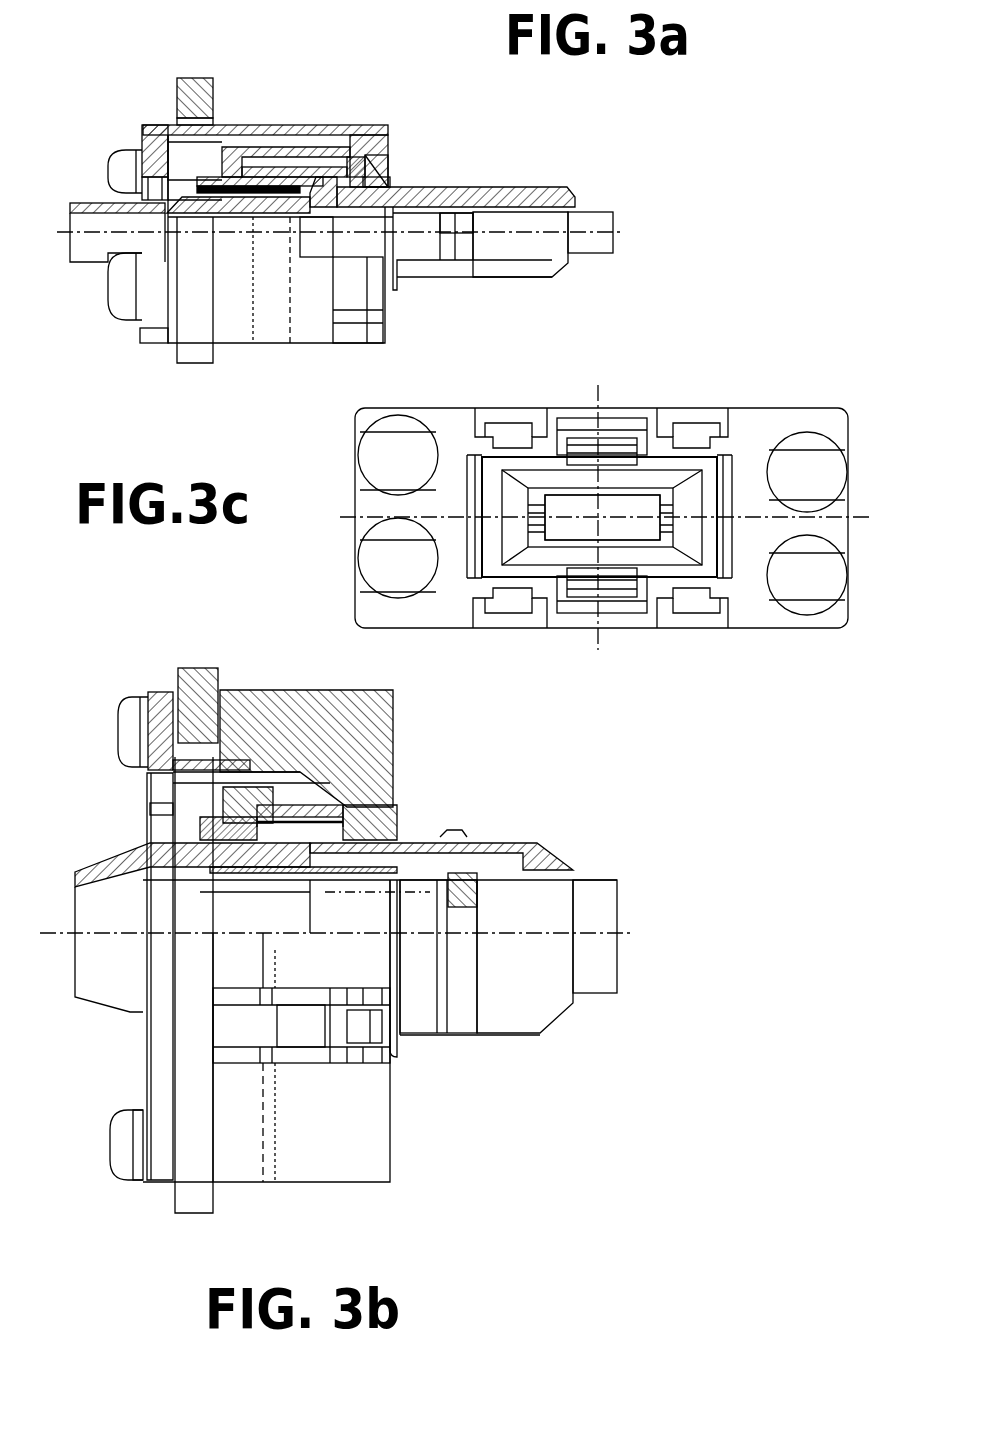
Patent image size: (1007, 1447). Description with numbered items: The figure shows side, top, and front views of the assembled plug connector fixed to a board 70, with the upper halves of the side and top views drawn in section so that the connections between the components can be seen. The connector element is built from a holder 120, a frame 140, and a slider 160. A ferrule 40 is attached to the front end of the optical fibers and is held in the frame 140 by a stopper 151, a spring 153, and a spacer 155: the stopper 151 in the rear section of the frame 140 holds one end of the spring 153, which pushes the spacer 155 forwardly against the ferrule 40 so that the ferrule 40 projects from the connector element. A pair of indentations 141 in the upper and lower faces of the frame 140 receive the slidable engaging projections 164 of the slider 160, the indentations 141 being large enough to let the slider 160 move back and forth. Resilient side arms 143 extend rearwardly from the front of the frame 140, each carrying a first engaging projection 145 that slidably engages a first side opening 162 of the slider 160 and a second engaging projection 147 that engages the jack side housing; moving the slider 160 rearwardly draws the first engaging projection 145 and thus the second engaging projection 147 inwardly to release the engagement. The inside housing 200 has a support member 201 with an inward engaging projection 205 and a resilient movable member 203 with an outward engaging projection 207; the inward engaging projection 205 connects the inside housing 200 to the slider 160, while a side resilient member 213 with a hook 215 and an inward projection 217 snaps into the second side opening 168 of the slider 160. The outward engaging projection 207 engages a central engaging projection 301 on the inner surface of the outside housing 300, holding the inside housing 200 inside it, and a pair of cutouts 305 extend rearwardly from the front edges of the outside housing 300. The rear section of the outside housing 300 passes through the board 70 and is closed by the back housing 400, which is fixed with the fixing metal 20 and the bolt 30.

In FIG. 3C, the fixing metal 20 is at (383, 565).
In FIG. 3A, the bolt 30 is at (113, 157).
In FIG. 3B, the bolt 30 is at (125, 715).
In FIG. 3A, the ferrule 40 is at (596, 243).
In FIG. 3B, the ferrule 40 is at (598, 900).
In FIG. 3A, the board 70 is at (178, 100).
In FIG. 3A, the holder 120 is at (95, 203).
In FIG. 3A, the frame 140 is at (540, 185).
In FIG. 3C, the frame 140 is at (685, 555).
In FIG. 3B, the frame 140 is at (545, 836).
In FIG. 3A, the indentations 141 is at (362, 300).
In FIG. 3B, the resilient side arms 143 is at (455, 838).
In FIG. 3B, the first engaging projection 145 is at (400, 835).
In FIG. 3B, the second engaging projection 147 is at (487, 860).
In FIG. 3A, the stopper 151 is at (253, 217).
In FIG. 3A, the spring 153 is at (455, 207).
In FIG. 3B, the spring 153 is at (433, 990).
In FIG. 3A, the spacer 155 is at (462, 255).
In FIG. 3A, the slider 160 is at (405, 180).
In FIG. 3B, the slider 160 is at (253, 783).
In FIG. 3B, the first side opening 162 is at (385, 803).
In FIG. 3A, the slidable engaging projections 164 is at (388, 148).
In FIG. 3B, the second side opening 168 is at (130, 842).
In FIG. 3A, the inside housing 200 is at (306, 125).
In FIG. 3A, the support member 201 is at (195, 200).
In FIG. 3A, the resilient movable member 203 is at (252, 128).
In FIG. 3A, the inward engaging projection 205 is at (320, 250).
In FIG. 3A, the outward engaging projection 207 is at (372, 128).
In FIG. 3B, the side resilient member 213 is at (390, 755).
In FIG. 3B, the hook 215 is at (240, 697).
In FIG. 3B, the inward projection 217 is at (150, 810).
In FIG. 3A, the outside housing 300 is at (232, 125).
In FIG. 3B, the outside housing 300 is at (337, 712).
In FIG. 3A, the central engaging projection 301 is at (365, 145).
In FIG. 3C, the cutouts 305 is at (510, 430).
In FIG. 3A, the back housing 400 is at (135, 122).